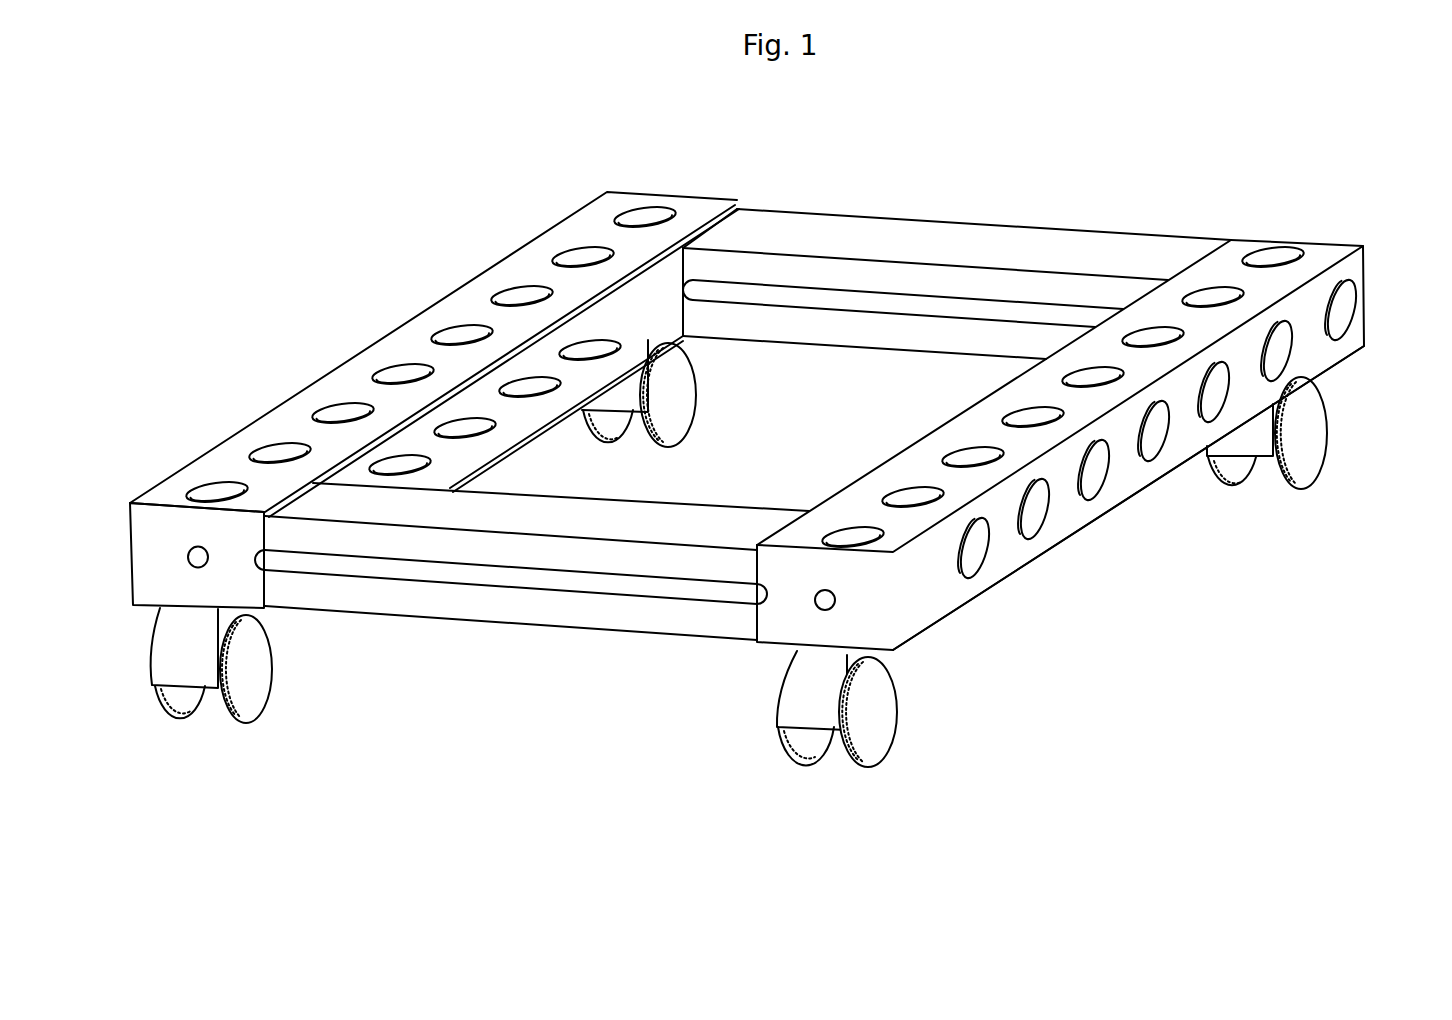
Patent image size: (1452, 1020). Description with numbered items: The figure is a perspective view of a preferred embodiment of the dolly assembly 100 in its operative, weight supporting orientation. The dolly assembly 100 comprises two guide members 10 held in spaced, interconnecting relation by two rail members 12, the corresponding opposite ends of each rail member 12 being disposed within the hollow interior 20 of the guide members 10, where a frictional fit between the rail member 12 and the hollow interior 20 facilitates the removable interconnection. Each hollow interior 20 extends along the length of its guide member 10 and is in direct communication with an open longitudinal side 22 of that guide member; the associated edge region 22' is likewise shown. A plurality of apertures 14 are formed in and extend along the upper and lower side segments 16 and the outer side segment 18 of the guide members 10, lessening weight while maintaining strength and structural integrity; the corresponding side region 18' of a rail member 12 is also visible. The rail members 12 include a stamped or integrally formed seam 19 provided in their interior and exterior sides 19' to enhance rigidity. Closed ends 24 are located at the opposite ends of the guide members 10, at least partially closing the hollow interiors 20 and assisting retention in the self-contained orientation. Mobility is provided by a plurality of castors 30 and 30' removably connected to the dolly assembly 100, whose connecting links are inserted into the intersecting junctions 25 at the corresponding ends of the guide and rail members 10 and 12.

The dolly assembly 100 is at (370, 205).
The guide member 10 is at (385, 335).
The rail member 12 is at (370, 612).
The aperture 14 is at (451, 323).
The upper and lower side segment 16 is at (310, 428).
The outer side segment 18 is at (1121, 498).
The rear beam top face 18' is at (789, 211).
The seam 19 is at (511, 621).
The interior and exterior side 19' is at (511, 653).
The hollow interior 20 is at (655, 283).
The open longitudinal side 22 is at (566, 321).
The upper rail 22' is at (637, 331).
The closed end 24 is at (158, 575).
The intersecting junction 25 is at (162, 481).
The castor 30 is at (739, 592).
The castor 30' is at (740, 627).